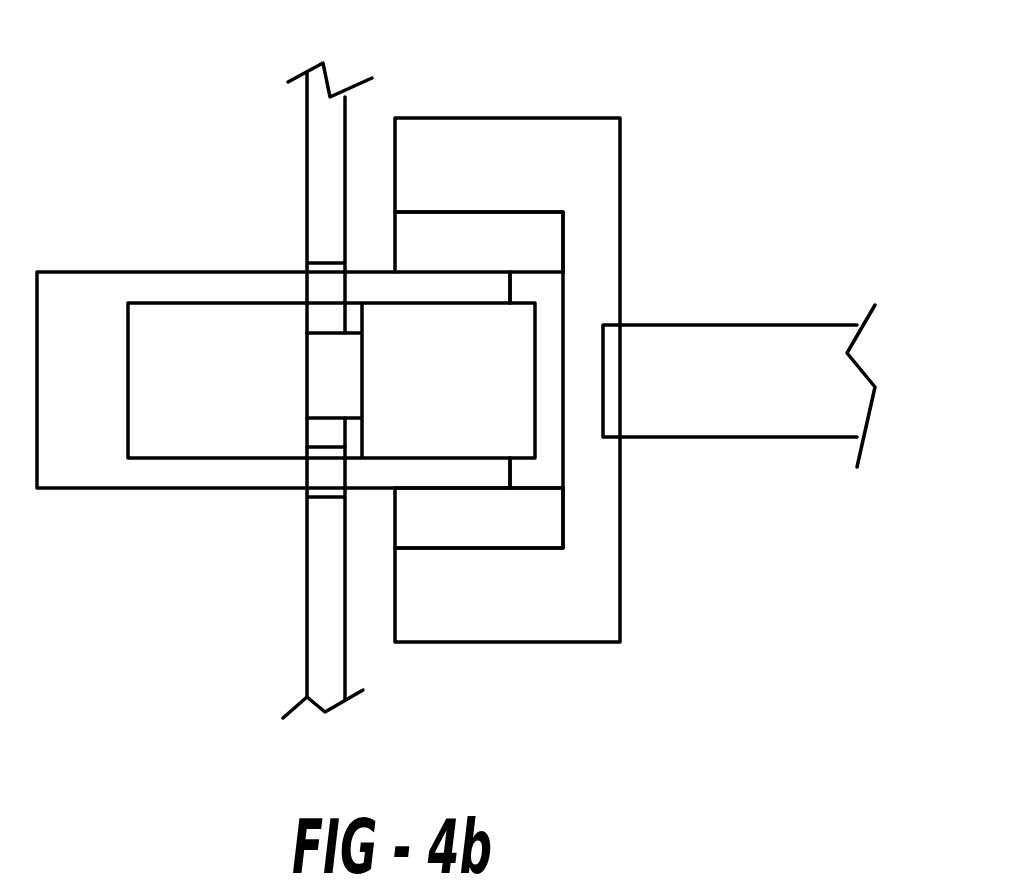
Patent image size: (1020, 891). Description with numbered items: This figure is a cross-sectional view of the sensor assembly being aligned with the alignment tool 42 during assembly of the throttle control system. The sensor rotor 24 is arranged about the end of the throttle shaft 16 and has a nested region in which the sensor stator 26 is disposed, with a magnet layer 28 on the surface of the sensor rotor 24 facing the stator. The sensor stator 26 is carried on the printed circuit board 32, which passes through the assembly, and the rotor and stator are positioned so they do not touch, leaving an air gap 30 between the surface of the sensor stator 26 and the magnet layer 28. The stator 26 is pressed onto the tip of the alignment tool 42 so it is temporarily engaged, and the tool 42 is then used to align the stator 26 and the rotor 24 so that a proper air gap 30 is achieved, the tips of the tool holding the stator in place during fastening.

The throttle shaft 16 is at (753, 413).
The sensor rotor 24 is at (470, 140).
The sensor stator 26 is at (397, 372).
The magnet layer 28 is at (540, 237).
The air gap 30 is at (552, 292).
The printed circuit board 32 is at (328, 163).
The alignment tool 42 is at (90, 290).